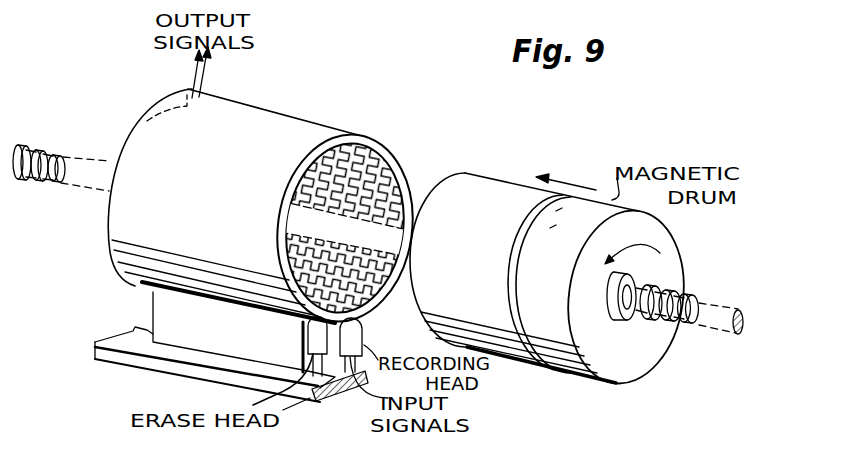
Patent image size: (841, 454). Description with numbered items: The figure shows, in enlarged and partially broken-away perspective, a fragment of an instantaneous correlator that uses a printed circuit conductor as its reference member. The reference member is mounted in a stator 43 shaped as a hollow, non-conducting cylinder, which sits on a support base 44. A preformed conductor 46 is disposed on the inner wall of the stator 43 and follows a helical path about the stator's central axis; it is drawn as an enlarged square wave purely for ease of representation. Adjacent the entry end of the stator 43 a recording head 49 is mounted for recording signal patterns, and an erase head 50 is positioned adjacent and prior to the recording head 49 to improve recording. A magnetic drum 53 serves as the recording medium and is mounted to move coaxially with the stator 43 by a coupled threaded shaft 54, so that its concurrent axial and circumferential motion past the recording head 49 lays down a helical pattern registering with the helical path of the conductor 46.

The stator 43 is at (308, 120).
The support base 44 is at (153, 305).
The preformed conductor 46 is at (394, 168).
The recording head 49 is at (364, 337).
The erase head 50 is at (306, 339).
The magnetic drum 53 is at (489, 172).
The threaded shaft 54 is at (712, 304).